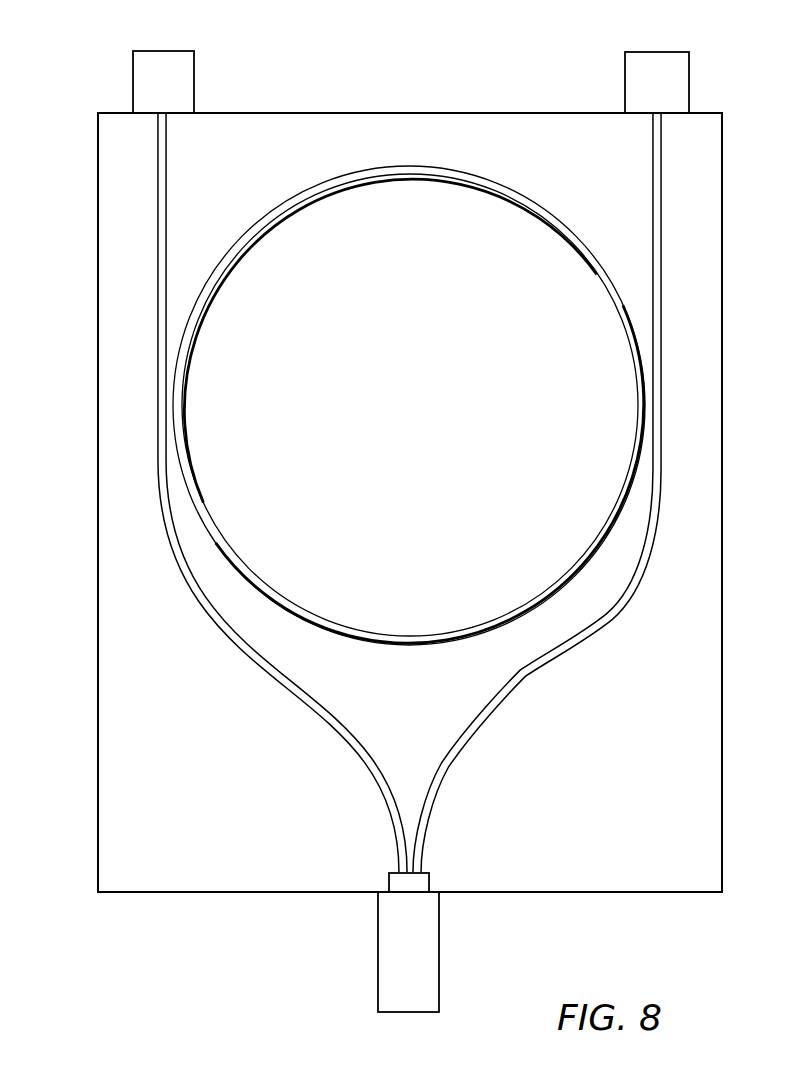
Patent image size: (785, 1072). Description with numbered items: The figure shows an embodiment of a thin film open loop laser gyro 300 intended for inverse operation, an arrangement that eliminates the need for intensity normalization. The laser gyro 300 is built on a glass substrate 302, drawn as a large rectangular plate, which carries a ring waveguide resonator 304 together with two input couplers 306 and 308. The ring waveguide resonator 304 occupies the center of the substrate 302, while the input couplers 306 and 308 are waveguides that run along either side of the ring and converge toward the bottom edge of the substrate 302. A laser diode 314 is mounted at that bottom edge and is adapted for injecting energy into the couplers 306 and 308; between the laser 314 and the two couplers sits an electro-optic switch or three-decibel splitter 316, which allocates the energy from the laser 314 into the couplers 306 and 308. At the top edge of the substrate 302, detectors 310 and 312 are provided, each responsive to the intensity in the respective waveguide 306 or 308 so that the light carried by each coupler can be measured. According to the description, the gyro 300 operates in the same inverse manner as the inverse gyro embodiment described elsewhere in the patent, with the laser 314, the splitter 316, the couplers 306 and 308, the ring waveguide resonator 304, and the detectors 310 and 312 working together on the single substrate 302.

The laser gyro 300 is at (365, 502).
The glass substrate 302 is at (191, 842).
The ring waveguide resonator 304 is at (457, 181).
The input coupler 306 is at (212, 618).
The input coupler 308 is at (613, 614).
The detector 310 is at (150, 50).
The detector 312 is at (650, 52).
The laser diode 314 is at (378, 946).
The electro-optic switch or 3 dB splitter 316 is at (389, 880).